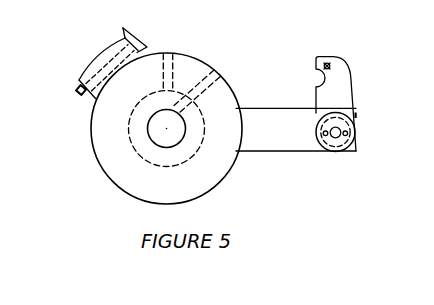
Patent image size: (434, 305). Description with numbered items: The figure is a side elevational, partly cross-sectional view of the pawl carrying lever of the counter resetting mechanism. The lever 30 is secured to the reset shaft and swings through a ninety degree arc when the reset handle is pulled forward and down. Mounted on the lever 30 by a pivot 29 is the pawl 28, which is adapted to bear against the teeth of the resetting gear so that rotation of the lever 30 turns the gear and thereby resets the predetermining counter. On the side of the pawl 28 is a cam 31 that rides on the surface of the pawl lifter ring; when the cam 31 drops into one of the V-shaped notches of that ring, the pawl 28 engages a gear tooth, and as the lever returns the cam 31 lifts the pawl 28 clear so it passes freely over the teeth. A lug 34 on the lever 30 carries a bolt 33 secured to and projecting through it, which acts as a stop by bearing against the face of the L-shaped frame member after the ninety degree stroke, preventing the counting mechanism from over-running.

The pawl 28 is at (342, 91).
The pivot 29 is at (338, 137).
The lever 30 is at (270, 141).
The cam 31 is at (329, 65).
The bolt 33 is at (77, 88).
The lug 34 is at (103, 53).